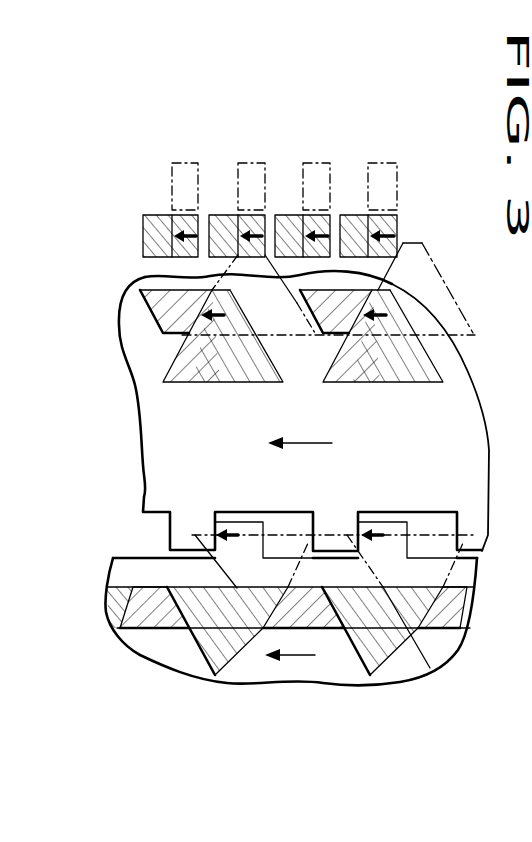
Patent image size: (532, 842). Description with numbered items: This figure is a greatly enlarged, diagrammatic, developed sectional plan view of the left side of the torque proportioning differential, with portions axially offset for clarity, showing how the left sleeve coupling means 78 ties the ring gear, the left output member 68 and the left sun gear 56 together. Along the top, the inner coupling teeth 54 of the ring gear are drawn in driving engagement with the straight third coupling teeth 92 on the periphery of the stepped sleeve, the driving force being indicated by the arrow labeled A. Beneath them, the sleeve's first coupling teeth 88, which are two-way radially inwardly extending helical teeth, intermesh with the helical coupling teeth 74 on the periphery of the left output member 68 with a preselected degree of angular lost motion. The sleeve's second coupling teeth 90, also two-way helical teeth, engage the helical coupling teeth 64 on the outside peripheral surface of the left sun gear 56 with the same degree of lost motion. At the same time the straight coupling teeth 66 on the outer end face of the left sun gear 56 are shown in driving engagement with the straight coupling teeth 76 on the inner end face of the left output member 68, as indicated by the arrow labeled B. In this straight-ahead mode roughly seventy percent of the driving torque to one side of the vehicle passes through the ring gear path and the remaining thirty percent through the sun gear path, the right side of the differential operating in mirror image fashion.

The inner coupling teeth 54 is at (193, 222).
The third coupling teeth 92 is at (163, 220).
The force arrow A is at (318, 238).
The left output member 68 is at (493, 424).
The helical coupling teeth 74 is at (177, 327).
The first coupling teeth 88 is at (220, 368).
The straight coupling teeth 76 is at (190, 523).
The straight coupling teeth 66 is at (252, 525).
The force arrow B is at (369, 531).
The left sun gear 56 is at (460, 653).
The second coupling teeth 90 is at (227, 655).
The helical coupling teeth 64 is at (152, 615).
The left sleeve coupling means 78 is at (419, 652).